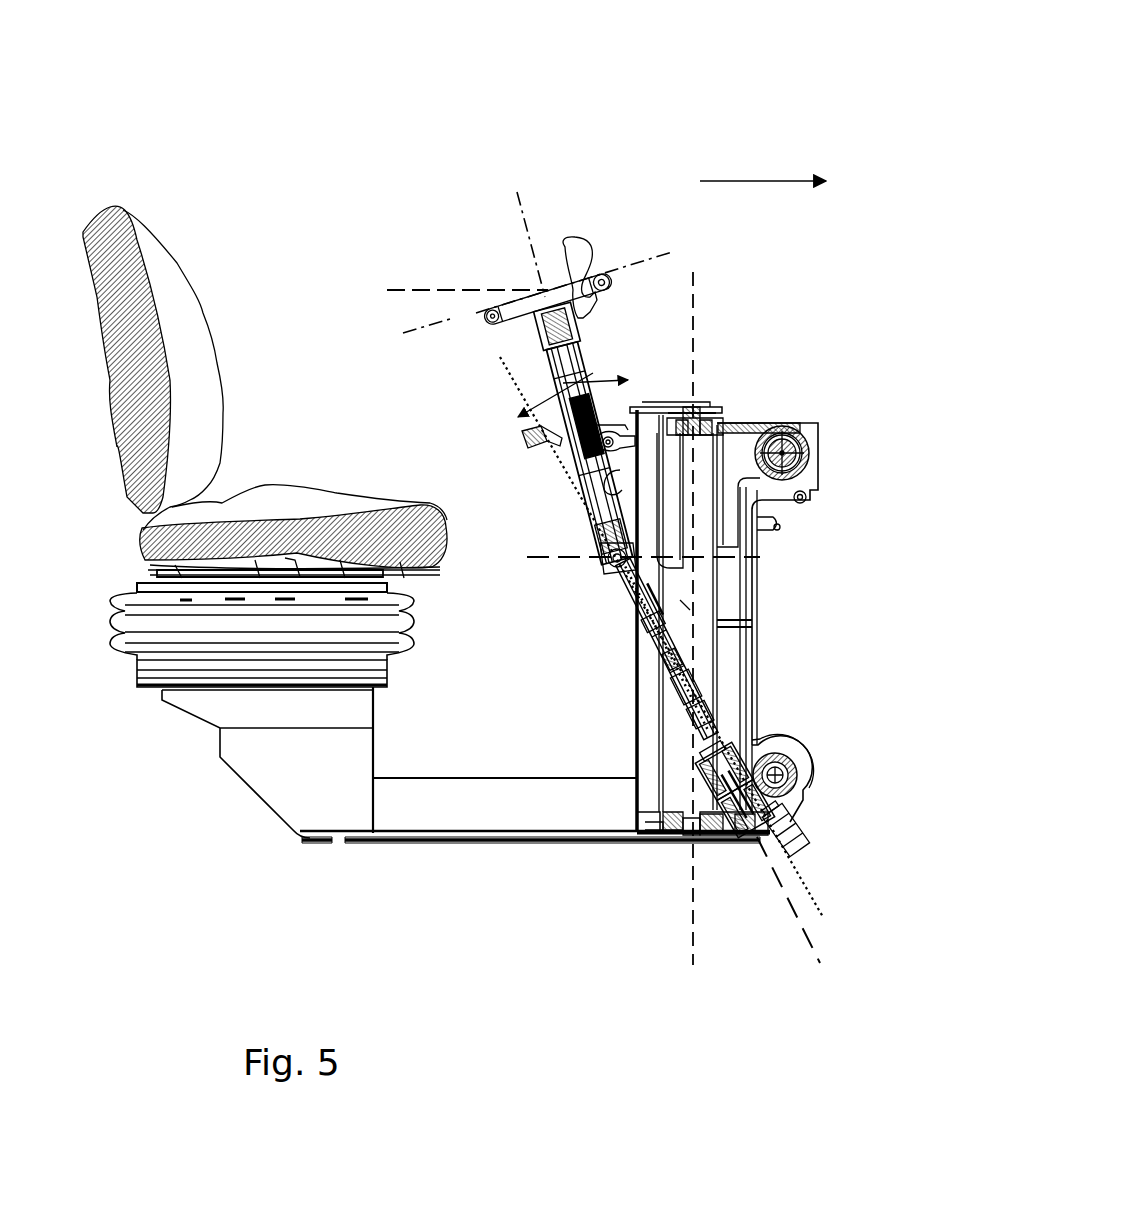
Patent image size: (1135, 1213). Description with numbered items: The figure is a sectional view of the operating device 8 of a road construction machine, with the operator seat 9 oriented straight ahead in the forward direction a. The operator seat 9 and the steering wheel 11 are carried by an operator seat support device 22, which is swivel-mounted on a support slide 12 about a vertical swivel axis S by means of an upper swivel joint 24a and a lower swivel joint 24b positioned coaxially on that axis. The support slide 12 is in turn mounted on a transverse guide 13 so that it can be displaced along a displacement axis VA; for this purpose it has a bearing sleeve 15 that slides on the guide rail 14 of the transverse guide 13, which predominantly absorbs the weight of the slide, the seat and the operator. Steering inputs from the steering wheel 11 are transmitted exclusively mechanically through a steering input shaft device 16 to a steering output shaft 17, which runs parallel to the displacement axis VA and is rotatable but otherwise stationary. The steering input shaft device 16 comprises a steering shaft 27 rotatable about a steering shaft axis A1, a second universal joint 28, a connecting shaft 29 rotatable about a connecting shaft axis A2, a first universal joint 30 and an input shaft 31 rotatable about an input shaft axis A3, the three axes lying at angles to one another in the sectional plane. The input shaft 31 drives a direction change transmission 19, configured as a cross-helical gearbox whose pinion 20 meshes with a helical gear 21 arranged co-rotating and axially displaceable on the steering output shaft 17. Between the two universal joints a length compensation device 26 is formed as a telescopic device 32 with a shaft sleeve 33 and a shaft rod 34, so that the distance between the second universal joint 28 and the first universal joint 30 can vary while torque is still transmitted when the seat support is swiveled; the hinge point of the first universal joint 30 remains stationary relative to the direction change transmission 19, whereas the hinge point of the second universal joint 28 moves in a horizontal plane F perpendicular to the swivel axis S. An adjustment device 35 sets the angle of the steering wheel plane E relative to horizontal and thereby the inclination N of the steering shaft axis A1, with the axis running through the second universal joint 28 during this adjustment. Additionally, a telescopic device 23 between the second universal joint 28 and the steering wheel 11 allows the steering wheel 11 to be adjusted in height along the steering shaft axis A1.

The operating device 8 is at (712, 128).
The operator seat 9 is at (142, 228).
The steering wheel 11 is at (585, 243).
The support slide 12 is at (752, 510).
The transverse guide 13 is at (795, 430).
The guide rail 14 is at (782, 453).
The bearing sleeve 15 is at (810, 440).
The steering input shaft device 16 is at (580, 480).
The steering output shaft 17 is at (793, 767).
The direction change transmission 19 is at (800, 806).
The pinion 20 is at (720, 837).
The helical gear 21 is at (787, 753).
The operator seat support device 22 is at (413, 820).
The telescopic device 23 is at (597, 403).
The upper swivel joint 24a is at (713, 403).
The lower swivel joint 24b is at (677, 843).
The length compensation device 26 is at (693, 640).
The steering shaft 27 is at (577, 350).
The second universal joint 28 is at (612, 560).
The connecting shaft 29 is at (638, 610).
The first universal joint 30 is at (725, 730).
The input shaft 31 is at (732, 837).
The telescopic device 32 is at (667, 665).
The shaft sleeve 33 is at (645, 630).
The shaft rod 34 is at (672, 680).
The adjustment device 35 is at (553, 440).
The steering shaft axis A1 is at (522, 232).
The connecting shaft axis A2 is at (843, 934).
The input shaft axis A3 is at (797, 917).
The steering wheel plane E is at (660, 252).
The horizontal plane F is at (631, 558).
The inclination of the steering shaft axis N is at (547, 400).
The swivel axis S is at (700, 340).
The displacement axis VA is at (788, 445).
The forward direction a is at (780, 182).